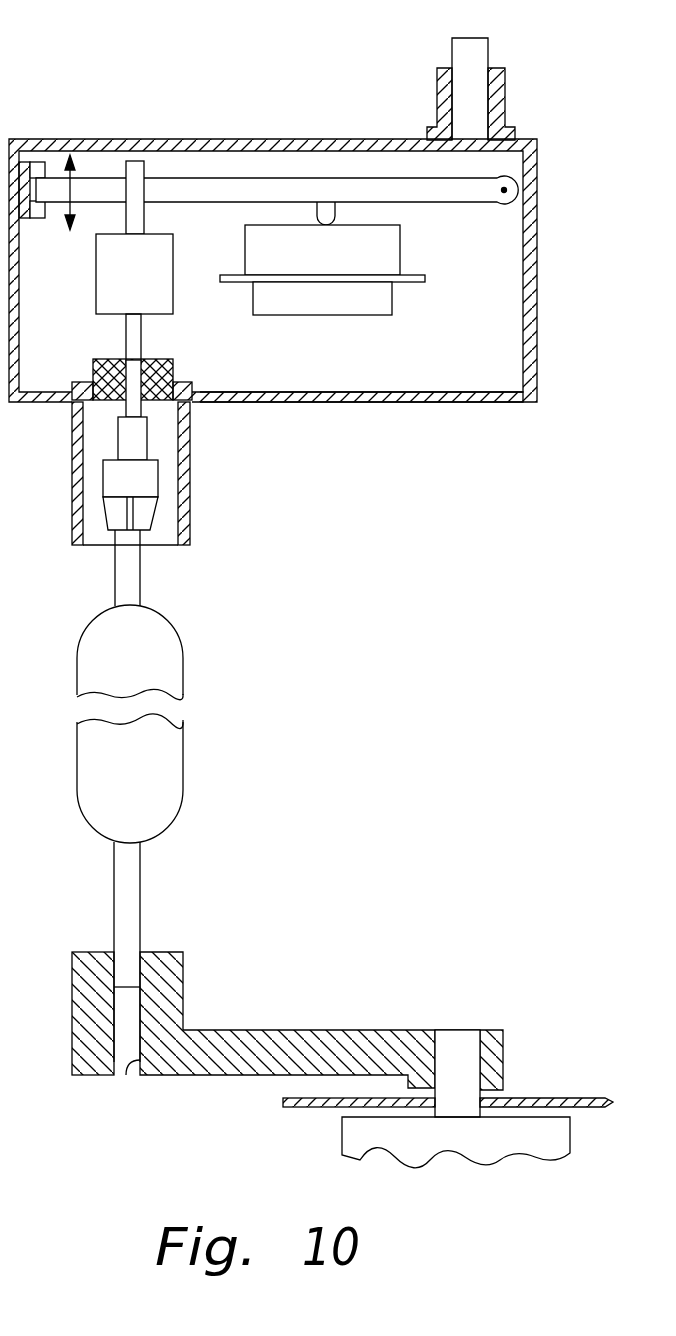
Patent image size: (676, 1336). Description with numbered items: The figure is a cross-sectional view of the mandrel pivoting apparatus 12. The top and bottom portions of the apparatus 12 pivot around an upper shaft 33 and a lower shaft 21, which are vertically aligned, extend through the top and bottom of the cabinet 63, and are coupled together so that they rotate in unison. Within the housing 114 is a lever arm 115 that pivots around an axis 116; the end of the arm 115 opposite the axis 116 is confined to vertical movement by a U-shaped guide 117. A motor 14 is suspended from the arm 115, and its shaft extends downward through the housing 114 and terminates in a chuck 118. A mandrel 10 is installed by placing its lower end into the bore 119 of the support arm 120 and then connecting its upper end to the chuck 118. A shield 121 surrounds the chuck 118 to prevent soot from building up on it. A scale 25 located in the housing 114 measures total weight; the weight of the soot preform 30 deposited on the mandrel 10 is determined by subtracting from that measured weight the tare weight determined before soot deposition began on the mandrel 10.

The mandrel 10 is at (128, 582).
The mandrel pivoting apparatus 12 is at (480, 407).
The motor 14 is at (112, 287).
The shaft 21 is at (452, 1047).
The scale 25 is at (382, 249).
The preform 30 is at (167, 652).
The shaft 33 is at (470, 50).
The cabinet 63 is at (553, 1097).
The housing 114 is at (358, 404).
The lever arm 115 is at (203, 189).
The axis 116 is at (503, 194).
The U-shaped guide 117 is at (40, 210).
The chuck 118 is at (148, 476).
The bore 119 is at (128, 1062).
The support arm 120 is at (256, 1077).
The shield 121 is at (187, 525).